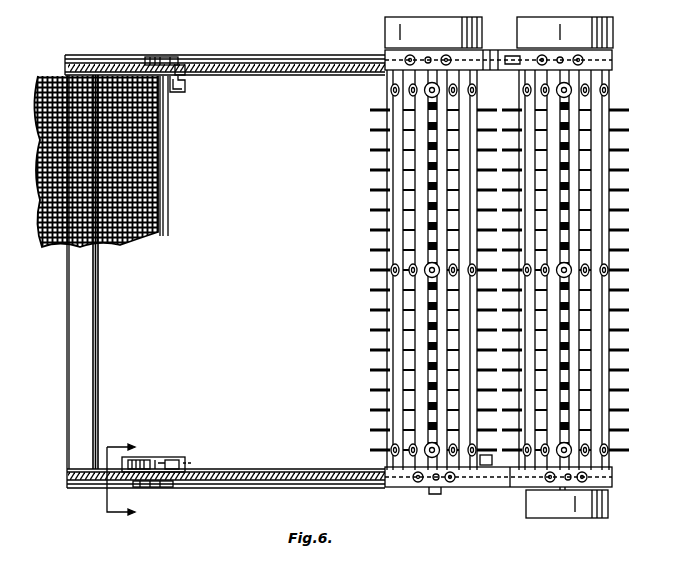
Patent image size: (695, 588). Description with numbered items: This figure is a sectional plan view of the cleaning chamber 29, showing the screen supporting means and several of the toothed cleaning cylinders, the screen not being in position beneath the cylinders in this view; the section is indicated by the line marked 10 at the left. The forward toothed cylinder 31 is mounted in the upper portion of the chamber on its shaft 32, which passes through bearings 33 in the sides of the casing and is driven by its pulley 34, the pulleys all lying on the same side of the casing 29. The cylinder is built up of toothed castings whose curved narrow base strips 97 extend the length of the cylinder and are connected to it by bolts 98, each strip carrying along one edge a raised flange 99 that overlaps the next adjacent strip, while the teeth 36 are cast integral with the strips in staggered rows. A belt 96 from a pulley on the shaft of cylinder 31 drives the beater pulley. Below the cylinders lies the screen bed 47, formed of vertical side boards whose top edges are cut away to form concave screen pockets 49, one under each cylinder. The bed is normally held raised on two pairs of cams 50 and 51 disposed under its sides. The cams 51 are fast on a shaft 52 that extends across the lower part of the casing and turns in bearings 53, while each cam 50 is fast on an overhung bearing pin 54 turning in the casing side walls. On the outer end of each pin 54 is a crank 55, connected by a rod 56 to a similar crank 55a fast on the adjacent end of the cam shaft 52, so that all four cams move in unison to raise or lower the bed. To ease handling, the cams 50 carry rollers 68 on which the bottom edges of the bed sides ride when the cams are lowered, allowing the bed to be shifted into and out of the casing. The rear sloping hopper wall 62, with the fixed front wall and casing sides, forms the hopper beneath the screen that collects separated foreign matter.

The section line 10 is at (131, 479).
The cleaning chamber 29 is at (270, 488).
The toothed cleaning cylinder 31 is at (388, 322).
The shaft 32 is at (435, 492).
The bearings 33 is at (460, 46).
The pulley 34 is at (383, 30).
The teeth 36 is at (380, 396).
The screen bed 47 is at (167, 190).
The concave screen pockets 49 is at (107, 257).
The cams 50 is at (182, 72).
The cams 51 is at (490, 70).
The shaft 52 is at (483, 462).
The bearings 53 is at (515, 488).
The overhung bearing pin 54 is at (180, 92).
The crank 55 is at (160, 57).
The crank 55a is at (510, 70).
The rod 56 is at (273, 60).
The rear sloping hopper wall 62 is at (110, 402).
The rollers 68 is at (167, 457).
The belt 96 is at (608, 505).
The base strips 97 is at (620, 232).
The bolts 98 is at (387, 107).
The flange 99 is at (613, 180).